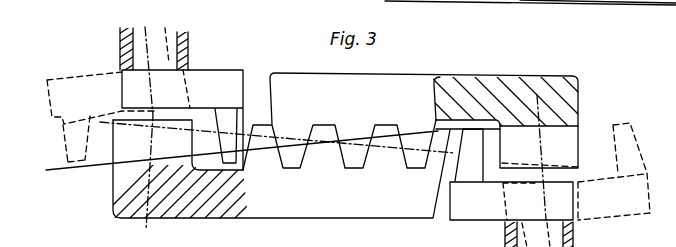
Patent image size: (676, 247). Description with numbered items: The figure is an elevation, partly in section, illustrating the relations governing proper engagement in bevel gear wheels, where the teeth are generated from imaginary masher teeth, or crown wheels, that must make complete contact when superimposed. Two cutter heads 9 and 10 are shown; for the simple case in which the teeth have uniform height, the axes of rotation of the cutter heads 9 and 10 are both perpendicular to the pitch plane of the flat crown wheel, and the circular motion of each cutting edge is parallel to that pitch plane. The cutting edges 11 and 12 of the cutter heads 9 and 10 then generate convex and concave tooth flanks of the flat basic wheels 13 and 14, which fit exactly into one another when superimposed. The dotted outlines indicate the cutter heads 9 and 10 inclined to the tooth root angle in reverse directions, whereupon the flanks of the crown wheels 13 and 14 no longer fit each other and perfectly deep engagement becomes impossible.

The cutter head 9 is at (176, 95).
The cutter head 10 is at (516, 214).
The cutting edge 11 is at (226, 136).
The cutting edge 12 is at (469, 155).
The flat basic wheel 13 is at (300, 169).
The flat basic wheel 14 is at (443, 119).